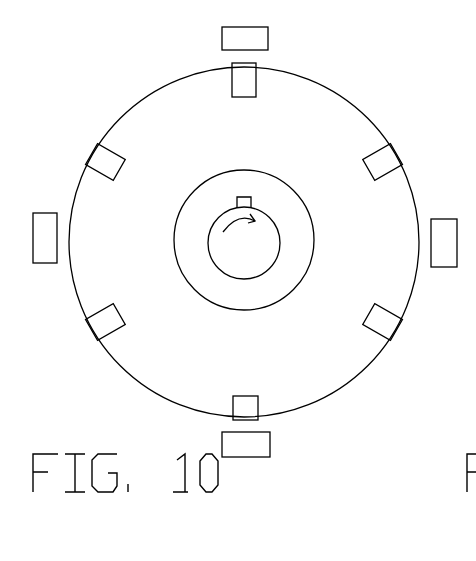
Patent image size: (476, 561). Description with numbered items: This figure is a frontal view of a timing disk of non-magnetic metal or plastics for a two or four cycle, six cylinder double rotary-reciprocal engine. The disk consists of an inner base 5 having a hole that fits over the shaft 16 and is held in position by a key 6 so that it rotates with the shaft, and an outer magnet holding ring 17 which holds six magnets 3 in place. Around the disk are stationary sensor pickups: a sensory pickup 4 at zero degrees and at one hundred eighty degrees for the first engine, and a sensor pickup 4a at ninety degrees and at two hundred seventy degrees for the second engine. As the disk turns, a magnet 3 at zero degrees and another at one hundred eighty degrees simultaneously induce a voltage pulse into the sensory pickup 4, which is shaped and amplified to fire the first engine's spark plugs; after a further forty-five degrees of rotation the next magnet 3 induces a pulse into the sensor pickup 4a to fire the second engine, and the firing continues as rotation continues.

The magnet 3 is at (245, 80).
The sensory pickup 4 is at (247, 40).
The sensor pickup 4a is at (43, 230).
The inner base 5 is at (226, 187).
The key 6 is at (251, 198).
The shaft 16 is at (236, 263).
The magnet holding ring 17 is at (350, 138).